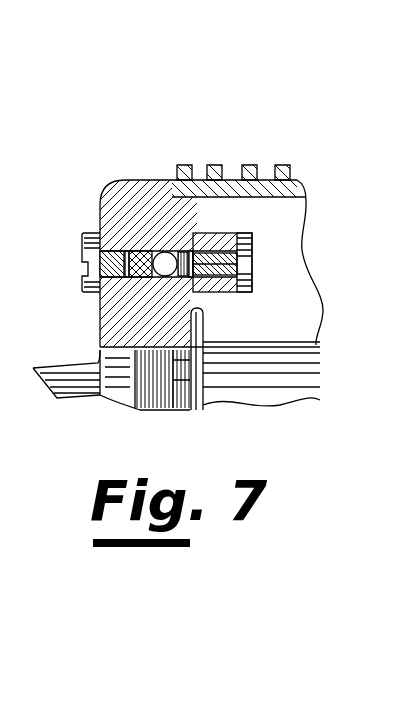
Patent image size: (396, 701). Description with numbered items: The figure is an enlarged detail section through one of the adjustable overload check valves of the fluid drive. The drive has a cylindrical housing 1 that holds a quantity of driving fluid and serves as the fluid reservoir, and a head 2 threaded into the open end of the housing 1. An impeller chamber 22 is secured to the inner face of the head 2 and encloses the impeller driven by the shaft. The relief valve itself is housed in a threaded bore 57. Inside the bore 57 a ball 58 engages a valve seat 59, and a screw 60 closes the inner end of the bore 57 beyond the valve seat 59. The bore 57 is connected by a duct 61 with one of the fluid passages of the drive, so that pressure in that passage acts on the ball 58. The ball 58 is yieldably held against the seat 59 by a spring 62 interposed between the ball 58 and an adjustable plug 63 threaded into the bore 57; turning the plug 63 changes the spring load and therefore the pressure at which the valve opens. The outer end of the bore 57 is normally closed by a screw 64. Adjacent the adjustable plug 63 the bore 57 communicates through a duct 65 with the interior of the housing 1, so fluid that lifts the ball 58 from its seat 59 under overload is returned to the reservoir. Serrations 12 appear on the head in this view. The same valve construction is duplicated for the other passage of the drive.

The cylindrical housing 1 is at (277, 172).
The head 2 is at (100, 208).
The serration teeth 12 is at (184, 168).
The impeller chamber 22 is at (290, 340).
The threaded bore 57 is at (134, 252).
The ball 58 is at (150, 278).
The valve seat 59 is at (198, 228).
The screw 60 is at (252, 262).
The duct 61 is at (197, 307).
The spring 62 is at (100, 277).
The adjustable plug 63 is at (128, 250).
The screw 64 is at (82, 240).
The duct 65 is at (175, 225).